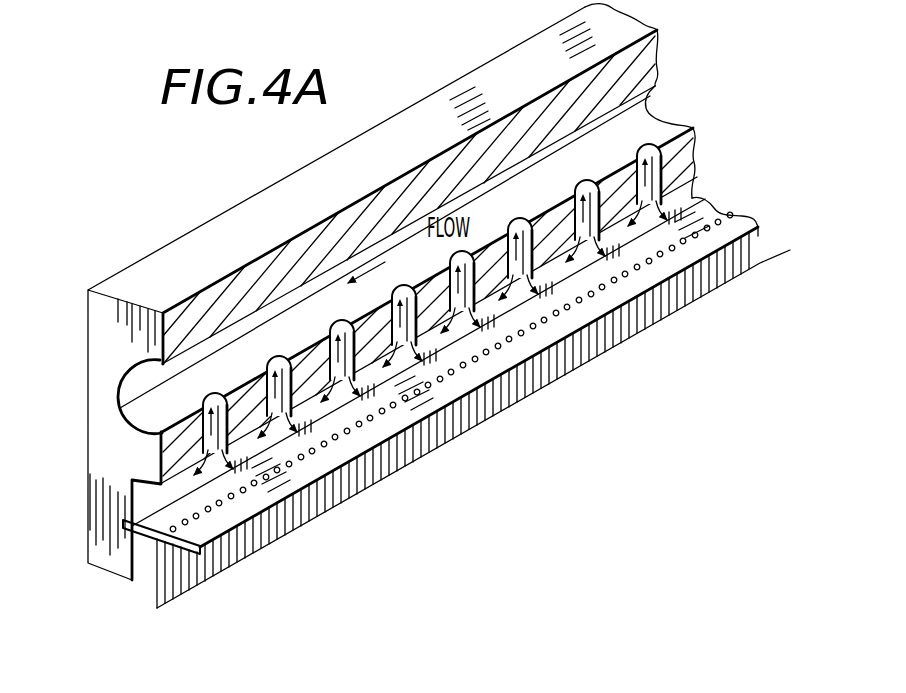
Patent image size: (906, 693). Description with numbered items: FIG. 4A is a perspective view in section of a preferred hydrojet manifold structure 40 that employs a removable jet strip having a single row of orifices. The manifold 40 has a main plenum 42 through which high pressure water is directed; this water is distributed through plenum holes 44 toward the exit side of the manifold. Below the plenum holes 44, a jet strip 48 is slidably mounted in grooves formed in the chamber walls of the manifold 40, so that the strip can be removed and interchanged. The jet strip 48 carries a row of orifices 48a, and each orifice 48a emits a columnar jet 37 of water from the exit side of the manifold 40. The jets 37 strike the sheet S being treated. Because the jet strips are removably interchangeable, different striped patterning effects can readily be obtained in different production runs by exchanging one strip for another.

The manifold structure 40 is at (80, 325).
The main plenum 42 is at (127, 432).
The plenum holes 44 is at (130, 521).
The jet strip 48 is at (208, 525).
The orifices 48a is at (140, 536).
The columnar jet 37 is at (398, 468).
The sheet S is at (157, 608).